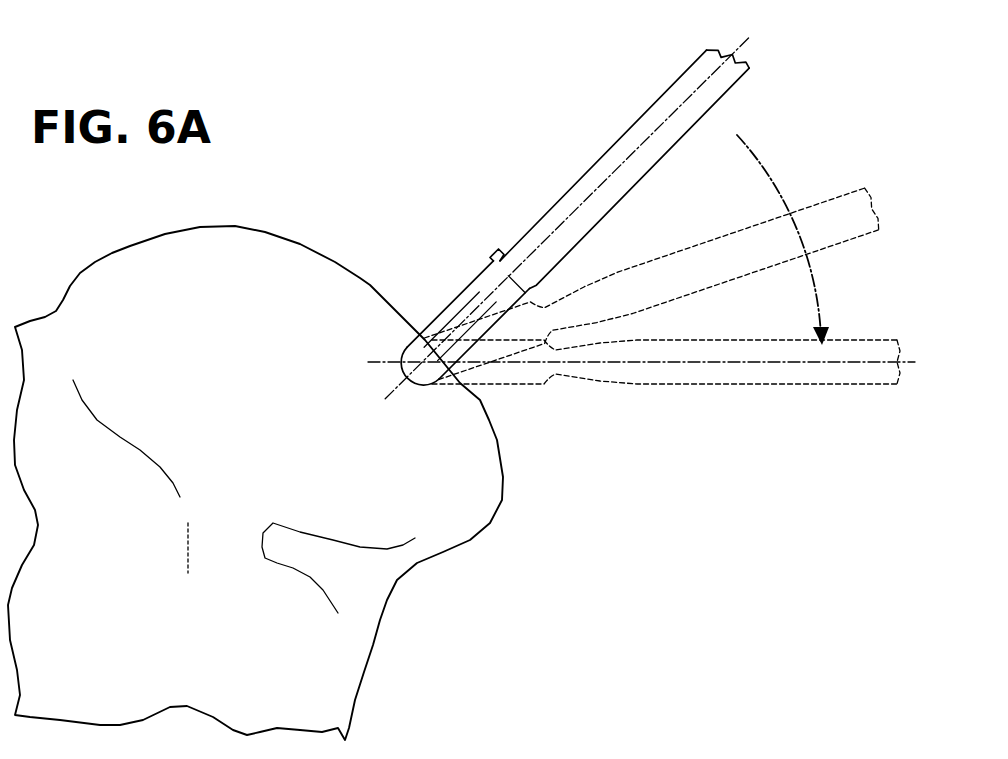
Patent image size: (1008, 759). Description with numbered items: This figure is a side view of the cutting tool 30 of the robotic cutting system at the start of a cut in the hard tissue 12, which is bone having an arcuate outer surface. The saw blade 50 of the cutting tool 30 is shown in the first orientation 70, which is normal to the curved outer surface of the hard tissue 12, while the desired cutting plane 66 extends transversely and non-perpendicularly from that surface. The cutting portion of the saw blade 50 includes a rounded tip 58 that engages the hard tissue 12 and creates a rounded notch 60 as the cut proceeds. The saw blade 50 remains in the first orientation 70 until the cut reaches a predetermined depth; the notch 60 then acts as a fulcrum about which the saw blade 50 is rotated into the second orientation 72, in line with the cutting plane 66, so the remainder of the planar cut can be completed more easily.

The hard tissue 12 is at (92, 305).
The cutting tool 30 is at (543, 214).
The saw blade 50 is at (460, 298).
The rounded tip 58 is at (407, 368).
The rounded notch 60 is at (421, 386).
The cutting plane 66 is at (365, 357).
The first orientation 70 is at (623, 98).
The second orientation 72 is at (782, 399).